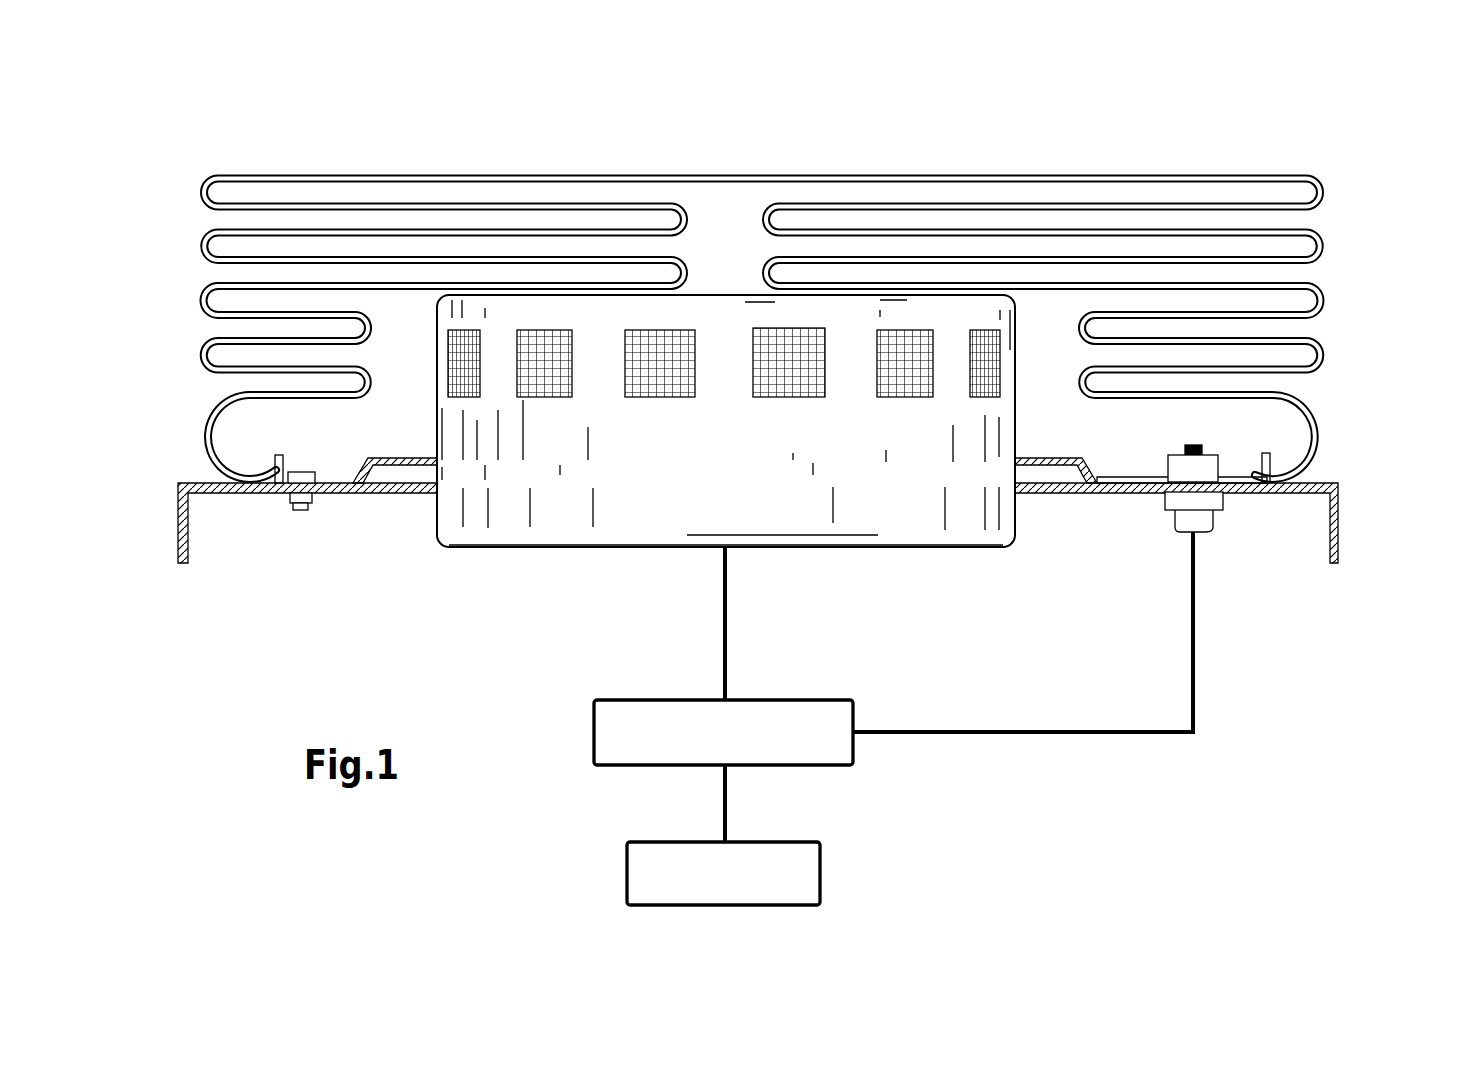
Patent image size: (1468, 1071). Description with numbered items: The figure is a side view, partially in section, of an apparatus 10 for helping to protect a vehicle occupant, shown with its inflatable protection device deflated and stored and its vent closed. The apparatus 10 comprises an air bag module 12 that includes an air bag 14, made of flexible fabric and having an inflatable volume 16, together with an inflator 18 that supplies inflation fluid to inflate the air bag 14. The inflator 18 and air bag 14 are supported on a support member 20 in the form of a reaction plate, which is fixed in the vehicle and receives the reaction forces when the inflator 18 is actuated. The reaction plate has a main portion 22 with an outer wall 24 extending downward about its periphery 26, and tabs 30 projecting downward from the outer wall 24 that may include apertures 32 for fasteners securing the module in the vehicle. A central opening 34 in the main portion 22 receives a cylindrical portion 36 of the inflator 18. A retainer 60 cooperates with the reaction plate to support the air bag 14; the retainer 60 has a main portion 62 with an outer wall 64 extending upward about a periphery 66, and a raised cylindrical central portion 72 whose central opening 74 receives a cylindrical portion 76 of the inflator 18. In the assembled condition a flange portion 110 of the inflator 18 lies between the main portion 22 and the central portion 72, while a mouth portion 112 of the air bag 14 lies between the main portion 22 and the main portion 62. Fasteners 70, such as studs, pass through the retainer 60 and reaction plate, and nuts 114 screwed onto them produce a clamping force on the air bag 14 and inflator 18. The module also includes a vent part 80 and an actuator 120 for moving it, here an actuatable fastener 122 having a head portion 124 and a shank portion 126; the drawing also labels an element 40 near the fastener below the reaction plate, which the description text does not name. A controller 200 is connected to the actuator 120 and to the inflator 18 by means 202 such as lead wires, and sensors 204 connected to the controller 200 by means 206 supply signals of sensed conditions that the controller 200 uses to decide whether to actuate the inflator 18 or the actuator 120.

The apparatus 10 is at (404, 134).
The air bag module 12 is at (486, 119).
The air bag 14 is at (638, 175).
The inflatable volume 16 is at (730, 205).
The inflator 18 is at (848, 352).
The support member 20 is at (250, 495).
The main portion 22 is at (1040, 492).
The outer wall 24 is at (180, 508).
The periphery 26 is at (187, 485).
The tabs 30 is at (177, 558).
The apertures 32 is at (177, 530).
The central opening 34 is at (440, 492).
The cylindrical portion 36 is at (540, 515).
The fitting nut 40 is at (1175, 490).
The retainer 60 is at (1092, 458).
The main portion 62 is at (1127, 477).
The outer wall 64 is at (255, 478).
The periphery 66 is at (272, 473).
The fasteners 70 is at (302, 472).
The central portion 72 is at (1030, 460).
The central opening 74 is at (437, 407).
The cylindrical portion 76 is at (633, 430).
The vent part 80 is at (1160, 493).
The flange portion 110 is at (407, 478).
The mouth portion 112 is at (348, 490).
The nuts 114 is at (297, 505).
The actuator 120 is at (1203, 517).
The actuatable fastener 122 is at (1203, 517).
The head portion 124 is at (1183, 522).
The shank portion 126 is at (1200, 447).
The controller 200 is at (830, 752).
The means 202 is at (735, 612).
The sensors 204 is at (812, 872).
The means 206 is at (720, 800).